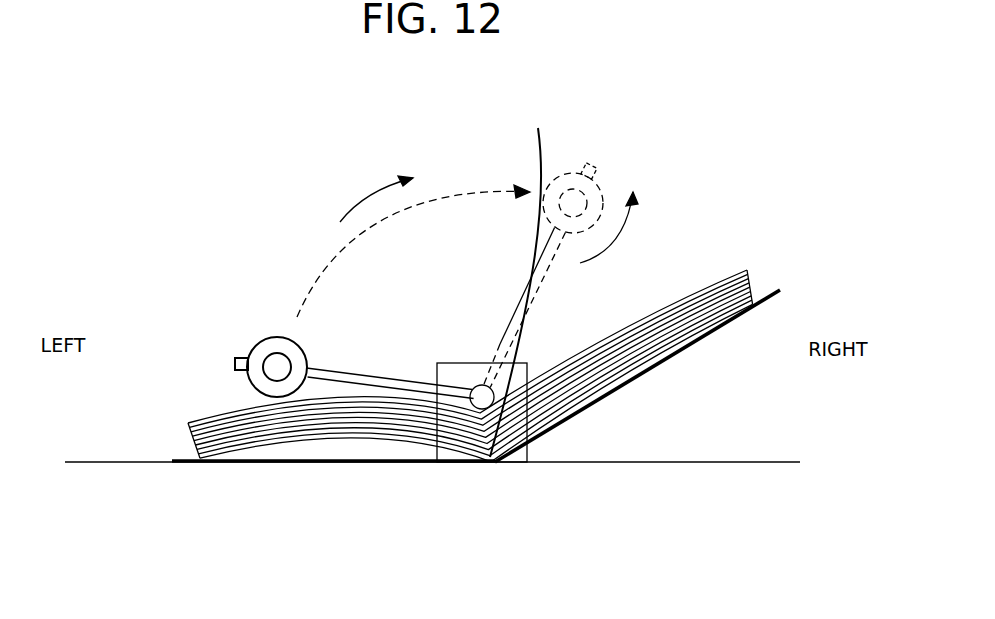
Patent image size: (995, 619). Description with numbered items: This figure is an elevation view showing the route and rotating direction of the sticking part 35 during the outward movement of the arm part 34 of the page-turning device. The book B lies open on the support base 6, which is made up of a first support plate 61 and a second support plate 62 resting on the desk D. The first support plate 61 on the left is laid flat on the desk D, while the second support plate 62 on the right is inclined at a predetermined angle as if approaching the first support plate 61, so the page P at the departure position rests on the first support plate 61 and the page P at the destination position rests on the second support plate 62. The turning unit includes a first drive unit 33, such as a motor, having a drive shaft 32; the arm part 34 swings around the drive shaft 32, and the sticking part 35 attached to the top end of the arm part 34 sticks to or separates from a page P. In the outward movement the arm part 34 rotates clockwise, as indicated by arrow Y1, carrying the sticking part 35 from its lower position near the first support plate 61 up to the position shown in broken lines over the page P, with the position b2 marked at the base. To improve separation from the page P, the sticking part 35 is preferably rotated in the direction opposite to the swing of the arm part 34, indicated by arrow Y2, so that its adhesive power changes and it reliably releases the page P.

The support base 6 is at (600, 402).
The drive shaft 32 is at (477, 386).
The first drive unit 33 is at (523, 363).
The arm part 34 is at (362, 372).
The sticking part 35 is at (258, 350).
The first support plate 61 is at (393, 466).
The second support plate 62 is at (660, 367).
The page P is at (537, 138).
The book B is at (328, 440).
The desk D is at (683, 462).
The bend position b2 is at (478, 412).
The arrow Y1 is at (413, 240).
The arrow Y2 is at (620, 227).